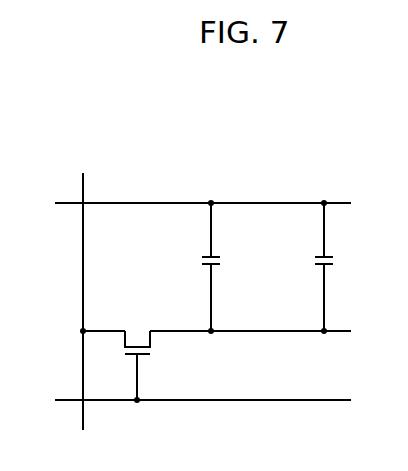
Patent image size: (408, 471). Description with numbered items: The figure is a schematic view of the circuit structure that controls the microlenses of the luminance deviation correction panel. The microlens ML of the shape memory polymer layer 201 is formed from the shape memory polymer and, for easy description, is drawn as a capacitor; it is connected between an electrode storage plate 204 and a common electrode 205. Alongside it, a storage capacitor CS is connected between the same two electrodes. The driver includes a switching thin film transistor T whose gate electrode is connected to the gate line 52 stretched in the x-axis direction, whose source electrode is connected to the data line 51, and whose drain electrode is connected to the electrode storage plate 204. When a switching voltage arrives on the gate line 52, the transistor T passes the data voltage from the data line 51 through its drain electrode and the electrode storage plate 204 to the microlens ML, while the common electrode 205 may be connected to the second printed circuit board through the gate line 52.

The data line 51 is at (83, 237).
The gate line 52 is at (188, 401).
The shape memory polymer layer 201 is at (195, 236).
The electrode storage plate 204 is at (280, 331).
The common electrode 205 is at (300, 203).
The storage capacitor CS is at (341, 267).
The switching thin film transistor T is at (137, 308).